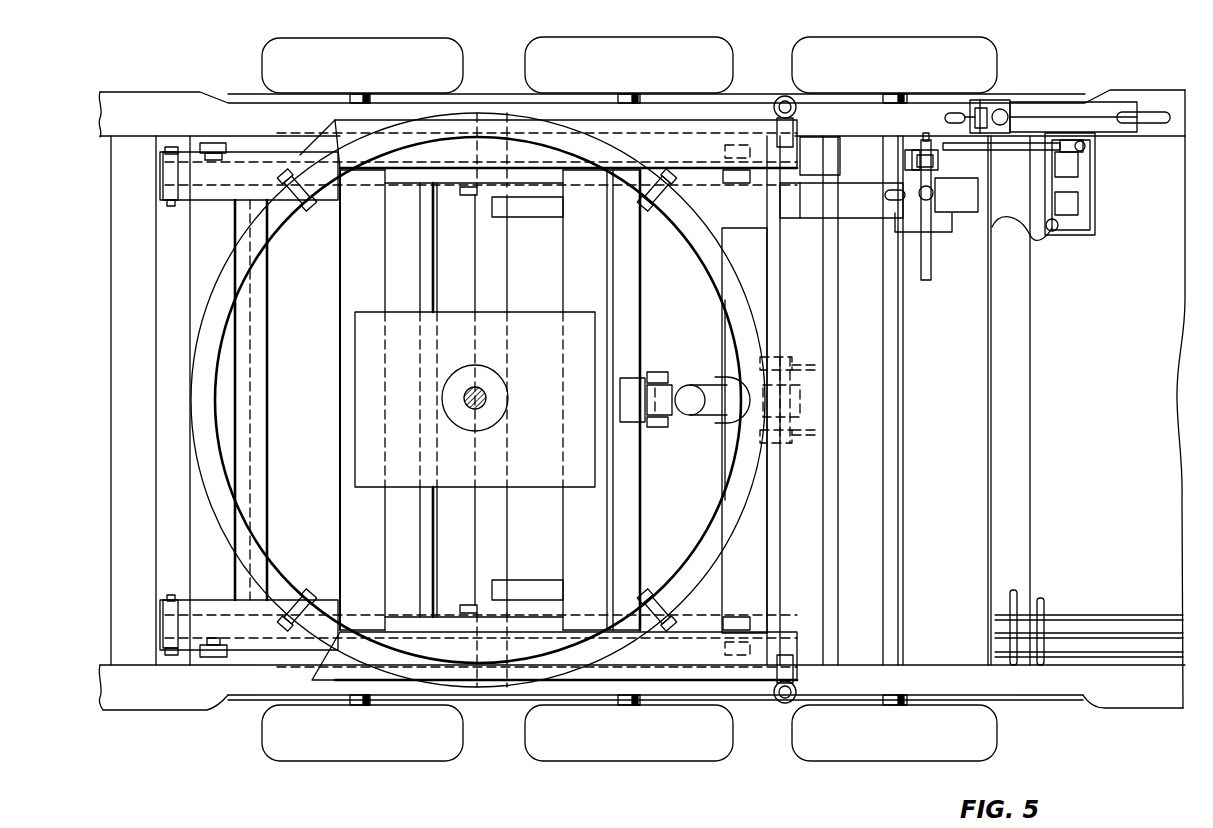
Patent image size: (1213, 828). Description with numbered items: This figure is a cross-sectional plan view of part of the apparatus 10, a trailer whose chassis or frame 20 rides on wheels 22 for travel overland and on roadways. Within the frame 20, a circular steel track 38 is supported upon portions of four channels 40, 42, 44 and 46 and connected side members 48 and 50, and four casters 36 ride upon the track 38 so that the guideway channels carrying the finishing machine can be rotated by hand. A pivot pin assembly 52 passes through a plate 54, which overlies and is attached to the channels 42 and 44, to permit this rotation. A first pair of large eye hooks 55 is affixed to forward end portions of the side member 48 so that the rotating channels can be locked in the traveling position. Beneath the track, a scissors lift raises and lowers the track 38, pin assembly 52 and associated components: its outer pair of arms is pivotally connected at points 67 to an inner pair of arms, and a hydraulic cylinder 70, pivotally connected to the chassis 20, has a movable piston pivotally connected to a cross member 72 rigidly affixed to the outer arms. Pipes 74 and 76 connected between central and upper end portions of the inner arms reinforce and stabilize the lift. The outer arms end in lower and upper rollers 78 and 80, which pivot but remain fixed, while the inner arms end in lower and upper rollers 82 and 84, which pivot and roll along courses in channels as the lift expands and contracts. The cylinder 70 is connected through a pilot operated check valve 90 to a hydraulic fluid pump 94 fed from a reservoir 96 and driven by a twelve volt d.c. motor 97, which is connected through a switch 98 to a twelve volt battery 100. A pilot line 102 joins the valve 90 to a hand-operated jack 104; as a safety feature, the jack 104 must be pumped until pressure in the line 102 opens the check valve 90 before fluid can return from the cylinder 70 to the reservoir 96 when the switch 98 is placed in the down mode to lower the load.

The apparatus 10 is at (757, 741).
The frame 20 is at (1037, 690).
The wheels 22 is at (466, 53).
The casters 36 is at (302, 205).
The circular steel track 38 is at (240, 530).
The channel 40 is at (190, 535).
The channel 42 is at (340, 263).
The channel 44 is at (565, 277).
The channel 46 is at (720, 343).
The side member 48 is at (367, 120).
The side member 50 is at (160, 195).
The pivot pin assembly 52 is at (487, 393).
The plate 54 is at (535, 487).
The eye hooks 55 is at (783, 95).
The pivot points 67 is at (470, 196).
The hydraulic cylinder 70 is at (695, 415).
The cross member 72 is at (635, 500).
The pipe 74 is at (425, 548).
The pipe 76 is at (263, 357).
The lower rollers 78 is at (228, 143).
The upper rollers 80 is at (725, 145).
The lower rollers 82 is at (770, 180).
The upper rollers 84 is at (222, 200).
The pilot operated check valve 90 is at (795, 405).
The hydraulic fluid pump 94 is at (930, 175).
The reservoir 96 is at (863, 210).
The motor 97 is at (965, 212).
The switch 98 is at (915, 140).
The battery 100 is at (1082, 180).
The pilot line 102 is at (950, 113).
The hand-operated jack 104 is at (1050, 105).